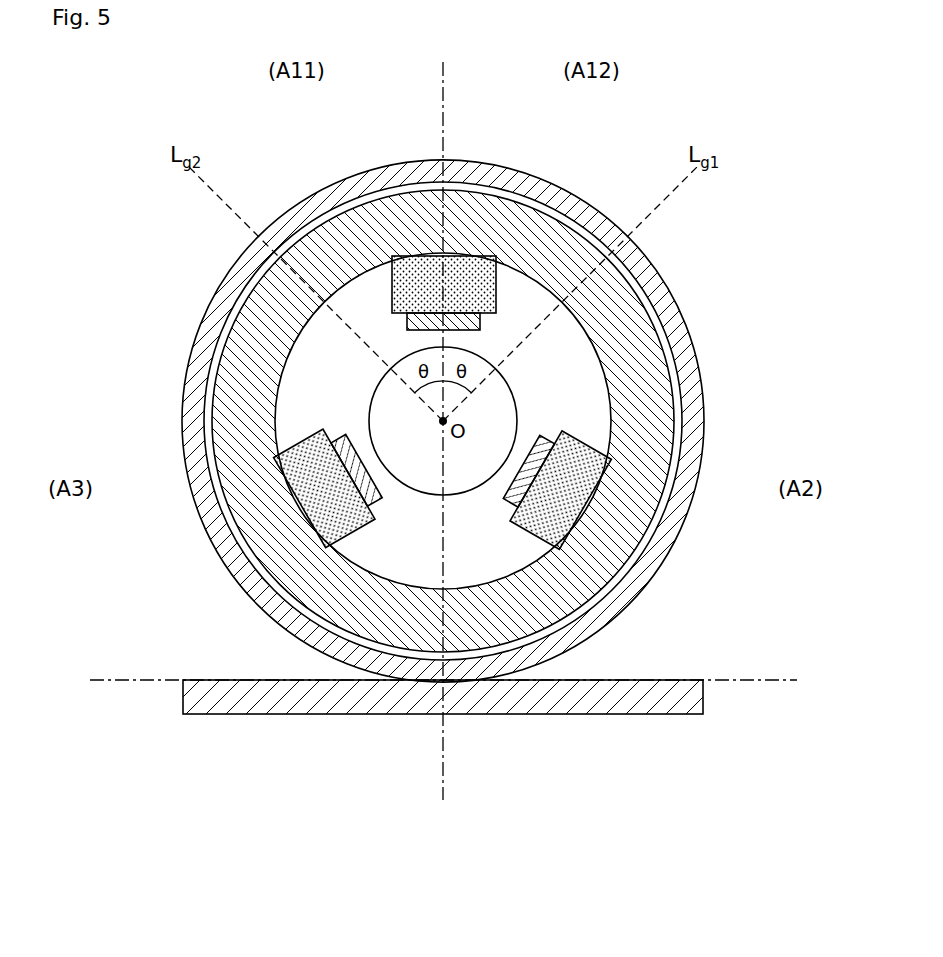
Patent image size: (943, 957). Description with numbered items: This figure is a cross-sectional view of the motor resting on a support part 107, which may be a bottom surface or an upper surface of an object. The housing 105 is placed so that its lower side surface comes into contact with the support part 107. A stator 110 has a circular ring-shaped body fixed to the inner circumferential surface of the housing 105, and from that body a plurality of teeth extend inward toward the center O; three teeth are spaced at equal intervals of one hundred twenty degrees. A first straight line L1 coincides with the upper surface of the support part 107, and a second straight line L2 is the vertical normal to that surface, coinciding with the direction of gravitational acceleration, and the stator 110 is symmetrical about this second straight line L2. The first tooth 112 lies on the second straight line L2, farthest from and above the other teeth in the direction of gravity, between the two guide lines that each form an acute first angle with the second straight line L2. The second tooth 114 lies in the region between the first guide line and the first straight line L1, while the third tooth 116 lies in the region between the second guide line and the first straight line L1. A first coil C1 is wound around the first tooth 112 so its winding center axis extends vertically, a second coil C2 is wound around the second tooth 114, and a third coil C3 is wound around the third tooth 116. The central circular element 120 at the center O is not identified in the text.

The housing 105 is at (693, 415).
The stator 110 is at (640, 377).
The hub 120 is at (385, 412).
The first tooth 112 is at (428, 318).
The second tooth 114 is at (523, 480).
The third tooth 116 is at (365, 478).
The support part 107 is at (652, 700).
The first coil C1 is at (463, 270).
The second coil C2 is at (577, 487).
The third coil C3 is at (313, 487).
The first straight line L1 is at (456, 682).
The second straight line L2 is at (442, 416).